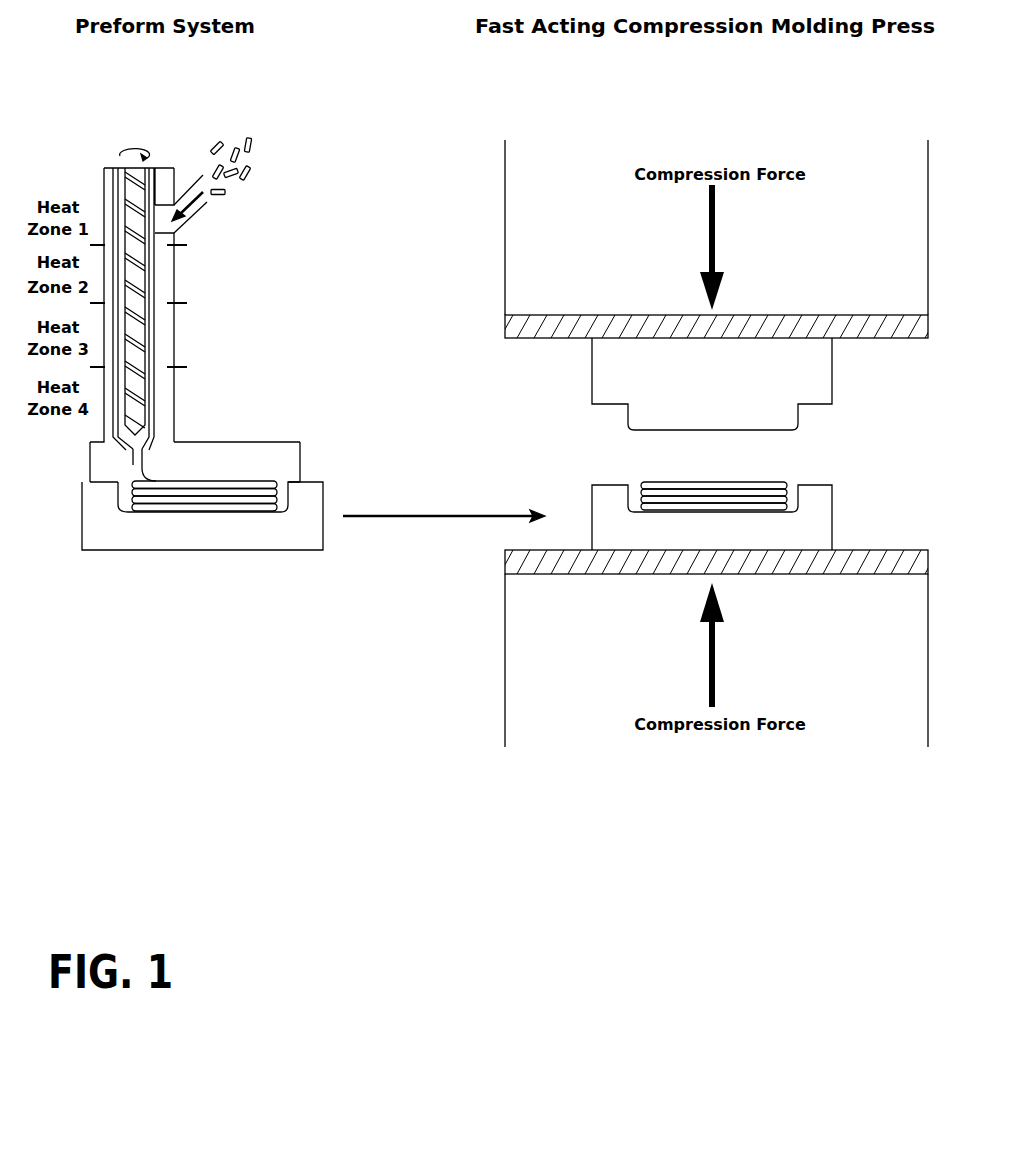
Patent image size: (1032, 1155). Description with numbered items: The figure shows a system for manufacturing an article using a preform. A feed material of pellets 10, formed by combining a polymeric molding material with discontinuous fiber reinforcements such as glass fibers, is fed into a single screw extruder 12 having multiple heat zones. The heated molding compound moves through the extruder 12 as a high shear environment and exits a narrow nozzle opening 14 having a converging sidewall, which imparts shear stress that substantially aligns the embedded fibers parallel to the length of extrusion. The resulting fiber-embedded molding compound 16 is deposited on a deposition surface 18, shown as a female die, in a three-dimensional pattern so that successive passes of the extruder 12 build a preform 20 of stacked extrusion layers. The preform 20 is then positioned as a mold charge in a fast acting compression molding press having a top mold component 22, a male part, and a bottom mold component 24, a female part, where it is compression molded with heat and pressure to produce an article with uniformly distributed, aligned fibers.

The pellets 10 is at (256, 125).
The extruder 12 is at (170, 348).
The nozzle opening 14 is at (147, 447).
The fiber-embedded molding compound 16 is at (133, 457).
The deposition surface 18 is at (128, 510).
The preform 20 is at (765, 482).
The top mold component 22 is at (832, 363).
The bottom mold component 24 is at (832, 500).